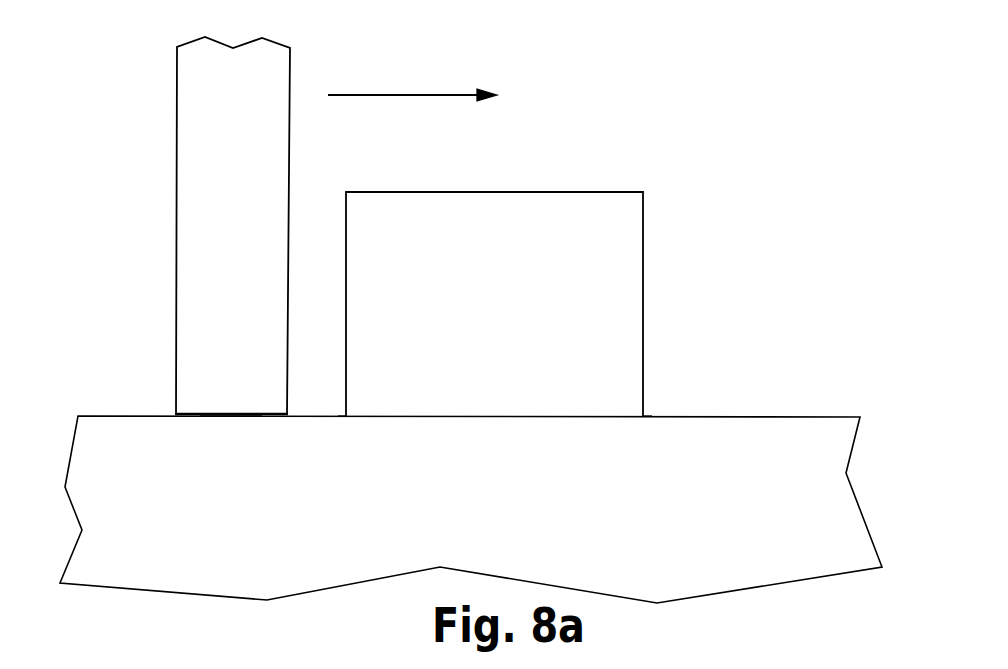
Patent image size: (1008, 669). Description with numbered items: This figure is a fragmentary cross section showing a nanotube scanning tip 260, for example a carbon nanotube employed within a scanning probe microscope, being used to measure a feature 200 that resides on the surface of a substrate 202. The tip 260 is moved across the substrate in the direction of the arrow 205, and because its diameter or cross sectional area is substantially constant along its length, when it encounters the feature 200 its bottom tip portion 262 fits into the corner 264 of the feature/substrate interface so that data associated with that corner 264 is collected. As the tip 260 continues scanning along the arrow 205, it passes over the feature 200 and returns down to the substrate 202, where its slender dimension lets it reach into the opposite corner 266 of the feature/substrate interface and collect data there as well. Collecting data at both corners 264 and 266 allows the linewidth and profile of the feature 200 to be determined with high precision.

The feature 200 is at (607, 192).
The substrate surface 202 is at (737, 417).
The scan direction arrow 205 is at (407, 95).
The nanotube scanning tip 260 is at (175, 183).
The bottom tip portion 262 is at (222, 416).
The corner 264 is at (331, 436).
The opposite corner 266 is at (643, 440).